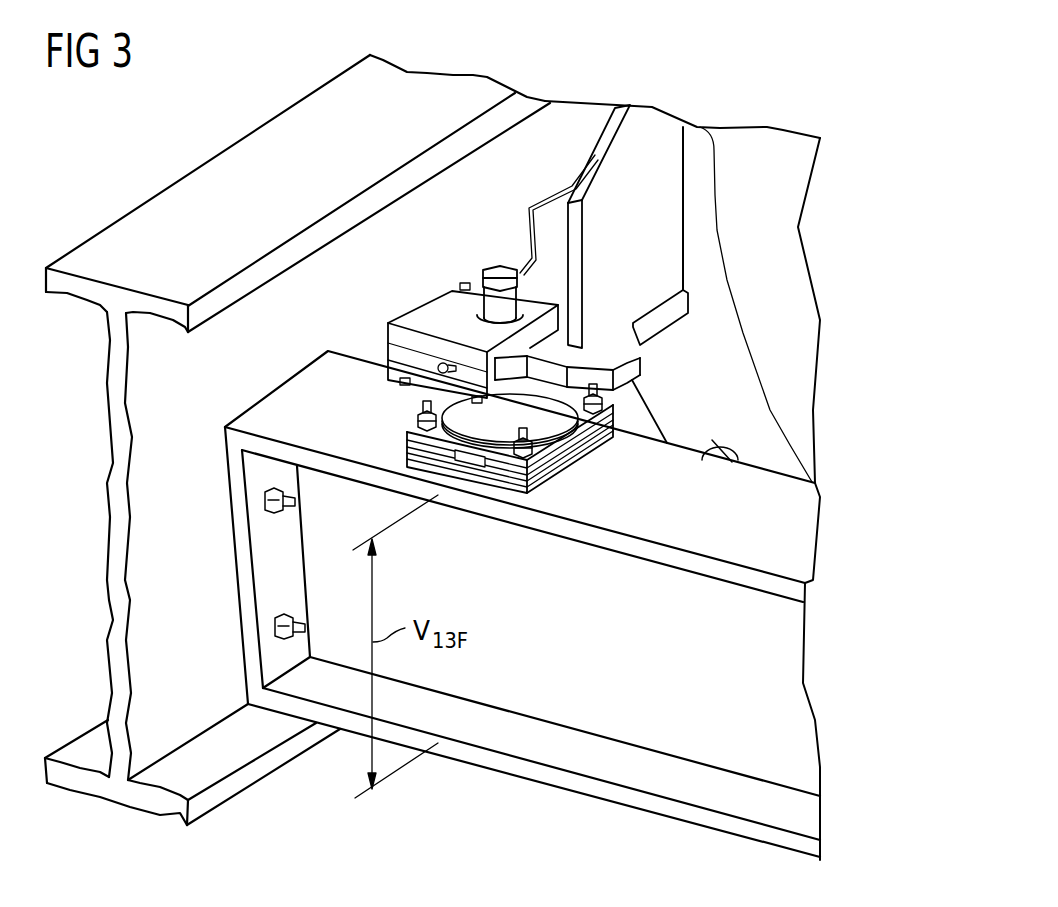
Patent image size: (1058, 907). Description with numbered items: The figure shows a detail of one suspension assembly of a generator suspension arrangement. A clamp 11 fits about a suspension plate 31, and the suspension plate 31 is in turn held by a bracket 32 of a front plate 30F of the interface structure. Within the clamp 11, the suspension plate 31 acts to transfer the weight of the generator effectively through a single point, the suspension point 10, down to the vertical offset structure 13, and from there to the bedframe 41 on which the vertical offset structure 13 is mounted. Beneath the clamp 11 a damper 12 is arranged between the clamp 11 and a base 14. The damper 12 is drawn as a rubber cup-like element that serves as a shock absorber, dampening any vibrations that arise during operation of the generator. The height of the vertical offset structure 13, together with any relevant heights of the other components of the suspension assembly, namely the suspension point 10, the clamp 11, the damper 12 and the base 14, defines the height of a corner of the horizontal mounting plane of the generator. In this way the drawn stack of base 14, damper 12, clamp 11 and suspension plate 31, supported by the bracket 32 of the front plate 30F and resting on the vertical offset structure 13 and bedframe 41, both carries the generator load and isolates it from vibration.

The bedframe 41 is at (160, 223).
The vertical offset structure 13 is at (678, 460).
The base 14 is at (485, 487).
The suspension point 10 is at (556, 420).
The damper 12 is at (457, 403).
The clamp 11 is at (432, 317).
The suspension plate 31 is at (633, 347).
The front plate 30F is at (700, 147).
The bracket 32 is at (663, 207).